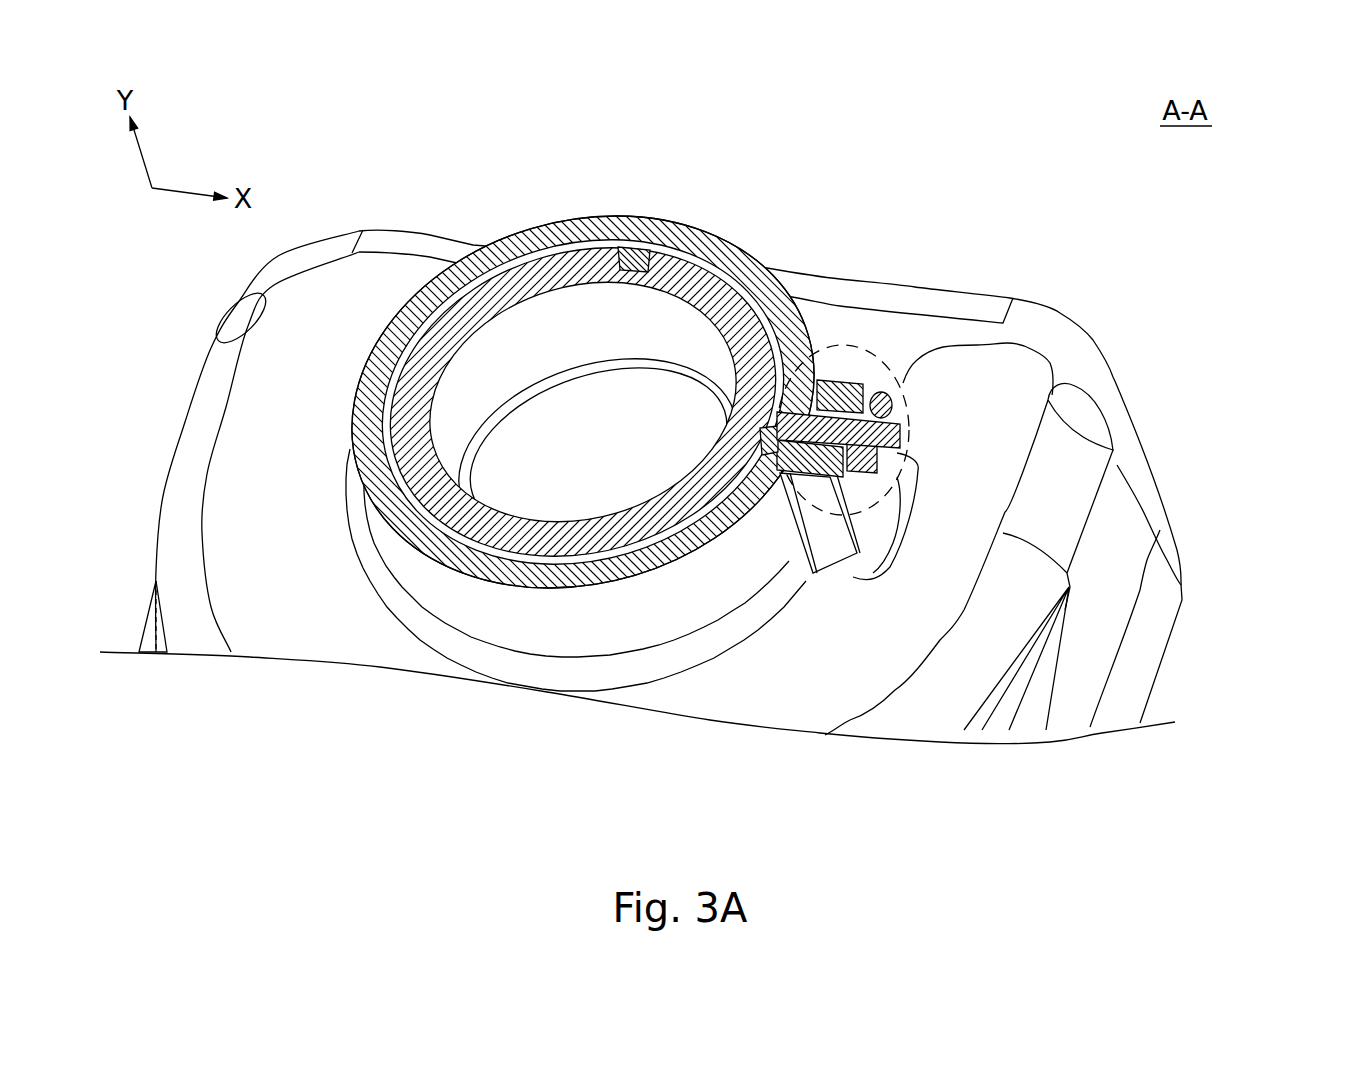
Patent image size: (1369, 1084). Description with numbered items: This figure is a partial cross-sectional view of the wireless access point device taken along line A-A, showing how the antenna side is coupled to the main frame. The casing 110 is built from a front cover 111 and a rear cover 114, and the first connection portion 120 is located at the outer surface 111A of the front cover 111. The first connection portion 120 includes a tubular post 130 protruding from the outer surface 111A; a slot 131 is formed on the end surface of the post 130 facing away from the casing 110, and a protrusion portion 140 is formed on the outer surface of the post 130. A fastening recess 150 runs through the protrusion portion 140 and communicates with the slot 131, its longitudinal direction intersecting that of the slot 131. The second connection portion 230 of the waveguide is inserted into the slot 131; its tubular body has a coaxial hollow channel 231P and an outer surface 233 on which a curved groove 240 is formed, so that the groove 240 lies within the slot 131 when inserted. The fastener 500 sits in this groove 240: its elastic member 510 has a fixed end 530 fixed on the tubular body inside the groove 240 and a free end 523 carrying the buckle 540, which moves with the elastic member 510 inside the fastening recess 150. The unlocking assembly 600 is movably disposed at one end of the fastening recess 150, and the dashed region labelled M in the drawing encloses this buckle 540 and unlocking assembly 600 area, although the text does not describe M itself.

The casing 110 is at (1268, 622).
The front cover 111 is at (1110, 615).
The outer surface 111A is at (218, 511).
The rear cover 114 is at (1140, 675).
The first connection portion 120 is at (532, 623).
The post 130 is at (448, 598).
The slot 131 is at (385, 389).
The protrusion portion 140 is at (828, 530).
The fastening recess 150 is at (850, 374).
The second connection portion 230 is at (530, 272).
The hollow channel 231P is at (504, 326).
The outer surface 233 is at (573, 245).
The groove 240 is at (737, 467).
The fastener 500 is at (770, 348).
The elastic member 510 is at (770, 369).
The free end 523 is at (761, 440).
The fixed end 530 is at (635, 254).
The buckle 540 is at (833, 412).
The unlocking assembly 600 is at (883, 390).
The engagement region M is at (902, 389).